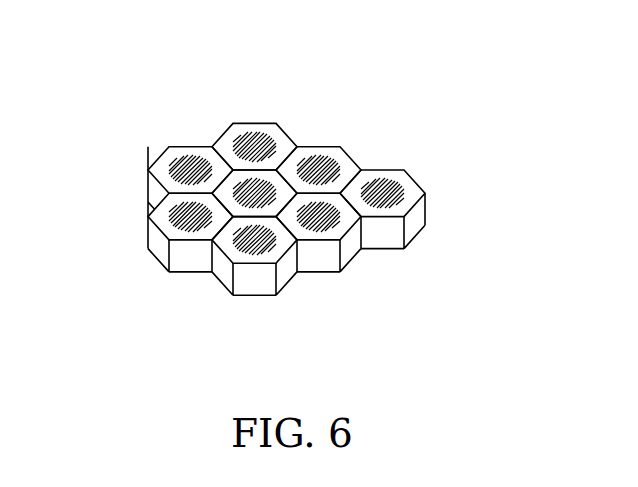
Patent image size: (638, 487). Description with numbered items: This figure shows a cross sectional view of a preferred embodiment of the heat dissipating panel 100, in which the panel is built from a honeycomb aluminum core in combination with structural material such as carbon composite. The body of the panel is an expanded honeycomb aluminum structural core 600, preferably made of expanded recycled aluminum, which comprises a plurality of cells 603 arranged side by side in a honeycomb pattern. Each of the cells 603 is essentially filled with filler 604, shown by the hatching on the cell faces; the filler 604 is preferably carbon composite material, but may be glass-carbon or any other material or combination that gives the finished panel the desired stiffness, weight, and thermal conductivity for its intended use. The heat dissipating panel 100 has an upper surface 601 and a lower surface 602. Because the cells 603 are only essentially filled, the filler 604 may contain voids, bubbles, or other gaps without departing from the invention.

The heat dissipating panel 100 is at (240, 102).
The expanded honeycomb aluminum structural core 600 is at (353, 150).
The upper surface 601 is at (409, 176).
The lower surface 602 is at (418, 232).
The cells 603 is at (375, 211).
The filler 604 is at (164, 221).